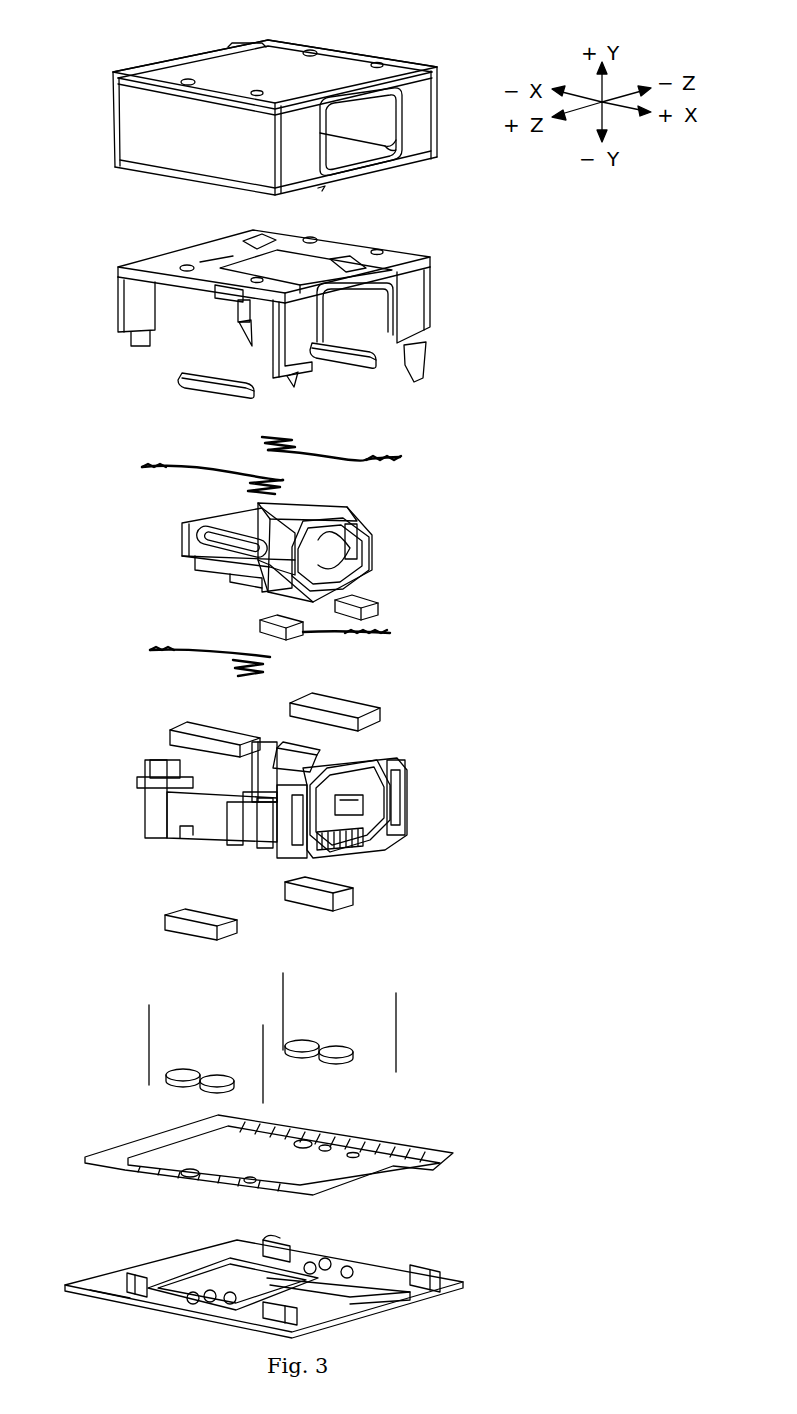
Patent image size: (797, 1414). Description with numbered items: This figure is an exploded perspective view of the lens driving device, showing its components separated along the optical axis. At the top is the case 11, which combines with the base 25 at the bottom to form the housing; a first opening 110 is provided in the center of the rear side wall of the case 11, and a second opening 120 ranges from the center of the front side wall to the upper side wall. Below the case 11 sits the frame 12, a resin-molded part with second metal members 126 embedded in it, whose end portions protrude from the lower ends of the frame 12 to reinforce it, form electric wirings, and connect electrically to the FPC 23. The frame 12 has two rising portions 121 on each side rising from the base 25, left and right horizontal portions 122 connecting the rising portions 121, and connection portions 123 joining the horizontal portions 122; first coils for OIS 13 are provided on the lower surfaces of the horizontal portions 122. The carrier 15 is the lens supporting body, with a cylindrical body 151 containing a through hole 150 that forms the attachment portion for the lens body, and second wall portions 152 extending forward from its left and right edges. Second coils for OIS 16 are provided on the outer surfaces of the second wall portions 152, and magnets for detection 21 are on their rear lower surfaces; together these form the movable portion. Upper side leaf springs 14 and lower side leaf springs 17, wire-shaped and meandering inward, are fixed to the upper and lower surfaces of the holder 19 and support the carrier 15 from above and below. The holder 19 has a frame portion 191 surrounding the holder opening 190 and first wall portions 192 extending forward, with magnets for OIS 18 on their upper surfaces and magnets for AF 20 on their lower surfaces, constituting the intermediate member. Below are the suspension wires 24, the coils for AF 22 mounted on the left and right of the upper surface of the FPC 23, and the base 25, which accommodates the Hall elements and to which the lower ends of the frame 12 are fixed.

The case 11 is at (294, 103).
The first opening 110 is at (387, 138).
The second opening 120 is at (176, 73).
The frame 12 is at (304, 317).
The rising portions 121 is at (270, 262).
The horizontal portions 122 is at (345, 248).
The connection portions 123 is at (233, 260).
The second metal members 126 is at (251, 347).
The first coils for OIS 13 is at (333, 347).
The upper side leaf springs 14 is at (325, 452).
The carrier 15 is at (295, 536).
The through hole 150 is at (320, 553).
The cylindrical body 151 is at (297, 503).
The second wall portions 152 is at (213, 558).
The second coils for OIS 16 is at (201, 527).
The lower side leaf springs 17 is at (327, 640).
The magnets for OIS 18 is at (365, 706).
The holder 19 is at (318, 791).
The holder opening 190 is at (373, 840).
The frame portion 191 is at (400, 787).
The first wall portions 192 is at (313, 753).
The magnets for AF 20 is at (330, 884).
The magnets for detection 21 is at (378, 600).
The coils for AF 22 is at (196, 1070).
The FPC 23 is at (460, 1141).
The suspension wires 24 is at (150, 1015).
The base 25 is at (465, 1261).